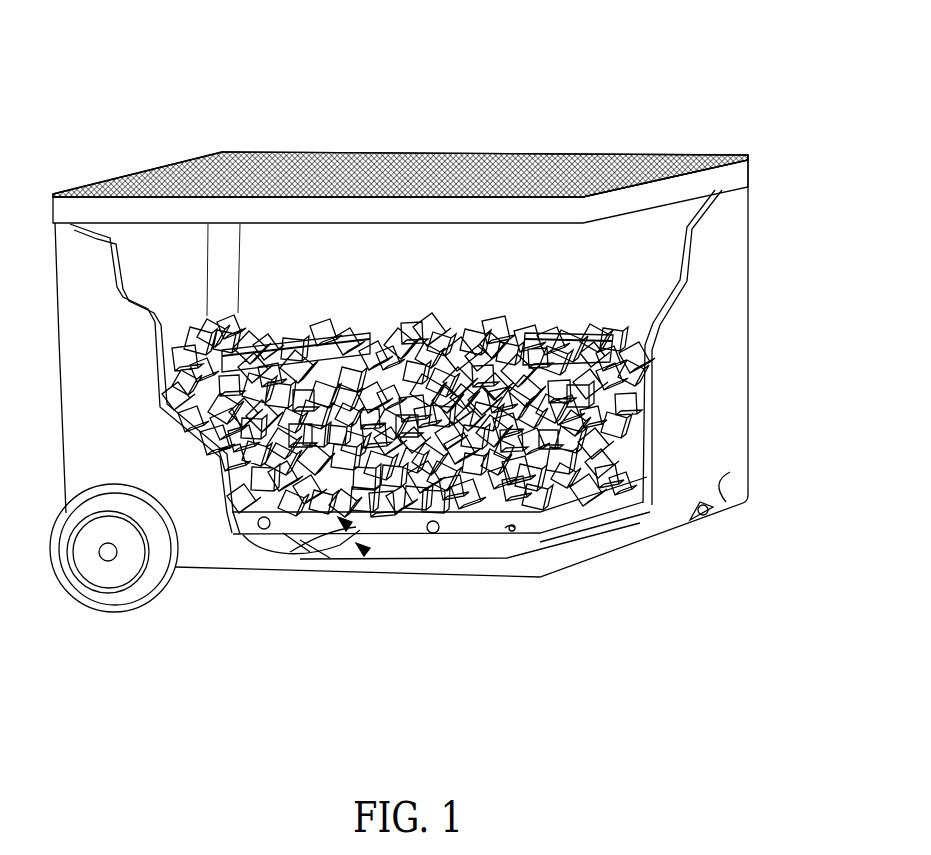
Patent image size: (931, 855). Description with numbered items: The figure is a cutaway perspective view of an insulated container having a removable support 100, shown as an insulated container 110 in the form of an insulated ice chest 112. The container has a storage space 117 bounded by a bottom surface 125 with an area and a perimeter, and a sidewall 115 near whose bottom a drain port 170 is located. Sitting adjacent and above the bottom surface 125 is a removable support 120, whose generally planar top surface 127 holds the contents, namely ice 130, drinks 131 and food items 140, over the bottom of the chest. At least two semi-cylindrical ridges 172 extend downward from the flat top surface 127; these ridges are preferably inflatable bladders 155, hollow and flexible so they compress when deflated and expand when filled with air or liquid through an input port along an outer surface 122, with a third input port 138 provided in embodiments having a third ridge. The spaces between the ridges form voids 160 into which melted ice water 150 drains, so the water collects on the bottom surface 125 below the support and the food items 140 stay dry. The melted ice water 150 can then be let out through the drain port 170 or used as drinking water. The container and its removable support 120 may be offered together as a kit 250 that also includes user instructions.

The insulated container having a removable support 100 is at (605, 134).
The insulated container 110 is at (733, 246).
The insulated ice chest 112 is at (737, 288).
The sidewall 115 is at (630, 240).
The storage space 117 is at (597, 269).
The removable support 120 is at (540, 526).
The outer surface 122 is at (510, 525).
The bottom surface 125 is at (352, 530).
The top surface 127 is at (469, 513).
The ice 130 is at (397, 318).
The drinks 131 is at (513, 447).
The third input port 138 is at (240, 527).
The food items 140 is at (297, 337).
The melted ice water 150 is at (510, 527).
The inflatable bladder 155 is at (442, 548).
The voids 160 is at (300, 540).
The drain port 170 is at (705, 500).
The semi-cylindrical ridges 172 is at (417, 548).
The kit 250 is at (727, 505).